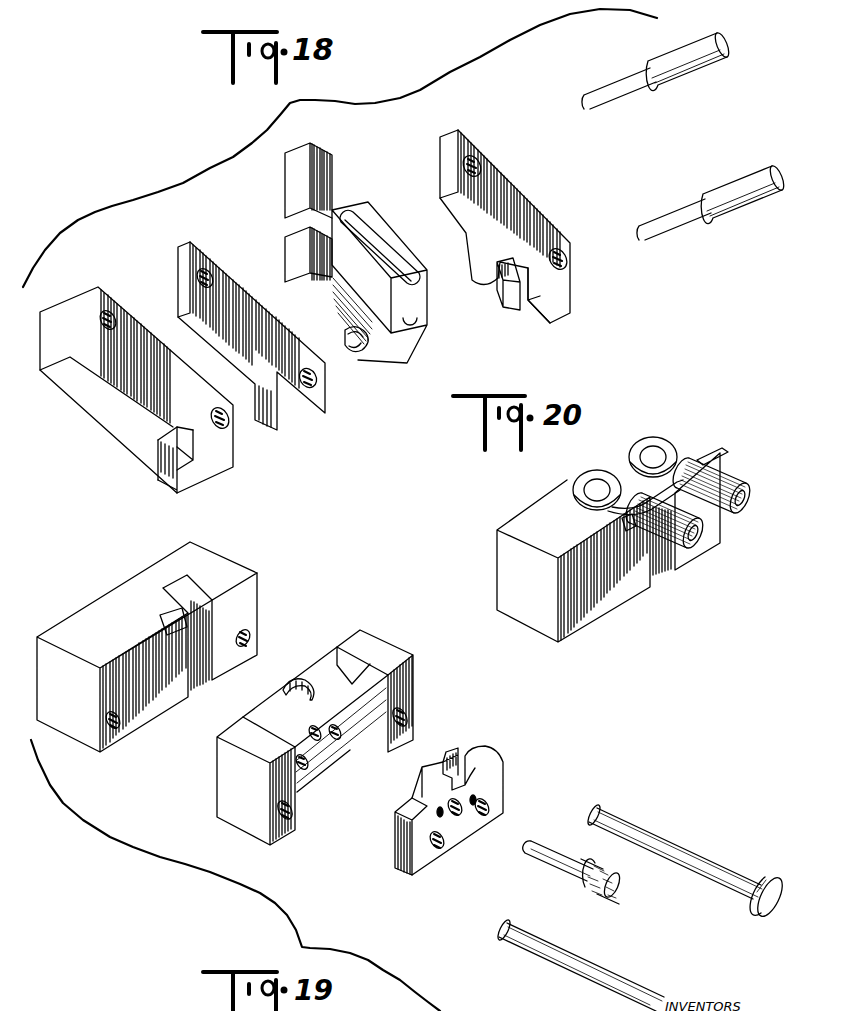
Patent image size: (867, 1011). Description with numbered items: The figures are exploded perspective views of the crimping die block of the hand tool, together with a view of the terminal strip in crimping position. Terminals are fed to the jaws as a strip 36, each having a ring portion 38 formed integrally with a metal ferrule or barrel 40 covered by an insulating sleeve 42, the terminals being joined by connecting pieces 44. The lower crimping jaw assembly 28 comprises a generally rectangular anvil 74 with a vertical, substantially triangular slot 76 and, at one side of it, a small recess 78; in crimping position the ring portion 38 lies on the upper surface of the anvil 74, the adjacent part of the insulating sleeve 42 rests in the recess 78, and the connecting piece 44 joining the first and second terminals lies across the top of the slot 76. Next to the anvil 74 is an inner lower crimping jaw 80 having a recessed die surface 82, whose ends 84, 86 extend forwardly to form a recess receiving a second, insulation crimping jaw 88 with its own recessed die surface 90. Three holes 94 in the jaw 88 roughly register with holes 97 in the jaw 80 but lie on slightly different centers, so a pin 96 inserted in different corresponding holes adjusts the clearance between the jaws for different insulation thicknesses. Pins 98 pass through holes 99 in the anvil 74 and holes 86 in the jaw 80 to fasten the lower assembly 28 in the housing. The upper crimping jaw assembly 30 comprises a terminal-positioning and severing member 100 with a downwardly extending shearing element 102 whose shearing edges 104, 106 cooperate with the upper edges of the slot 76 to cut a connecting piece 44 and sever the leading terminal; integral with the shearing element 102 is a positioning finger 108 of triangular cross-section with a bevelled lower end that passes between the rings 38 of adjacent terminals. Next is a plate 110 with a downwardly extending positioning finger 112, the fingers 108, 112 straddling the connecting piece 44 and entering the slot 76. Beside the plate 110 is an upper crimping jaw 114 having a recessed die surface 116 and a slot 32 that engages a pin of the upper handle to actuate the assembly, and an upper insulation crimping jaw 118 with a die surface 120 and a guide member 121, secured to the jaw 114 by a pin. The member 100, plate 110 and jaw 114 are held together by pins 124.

In FIG. 18, the upper crimping jaw assembly 30 is at (272, 110).
In FIG. 18, the terminal-positioning and severing member 100 is at (82, 300).
In FIG. 18, the shearing element 102 is at (158, 447).
In FIG. 18, the shearing edge 104 is at (158, 462).
In FIG. 18, the shearing edge 106 is at (187, 465).
In FIG. 18, the positioning finger 108 is at (167, 475).
In FIG. 18, the plate 110 is at (223, 287).
In FIG. 18, the positioning finger 112 is at (278, 405).
In FIG. 18, the upper crimping jaw 114 is at (302, 175).
In FIG. 18, the slot 32 is at (392, 227).
In FIG. 18, the recessed die surface 116 is at (353, 350).
In FIG. 18, the upper insulation crimping jaw 118 is at (442, 160).
In FIG. 18, the die surface 120 is at (500, 284).
In FIG. 18, the guide member 121 is at (532, 316).
In FIG. 18, the pins 124 is at (678, 57).
In FIG. 20, the anvil 74 is at (515, 520).
In FIG. 19, the anvil 74 is at (83, 615).
In FIG. 20, the slot 76 is at (660, 570).
In FIG. 19, the slot 76 is at (207, 592).
In FIG. 20, the recess 78 is at (628, 531).
In FIG. 19, the recess 78 is at (163, 618).
In FIG. 19, the holes 99 is at (250, 635).
In FIG. 19, the lower crimping jaw assembly 28 is at (285, 950).
In FIG. 19, the inner lower crimping jaw 80 is at (253, 712).
In FIG. 19, the recessed die surface 82 is at (292, 688).
In FIG. 19, the end 84 is at (403, 682).
In FIG. 19, the end 86 is at (405, 717).
In FIG. 19, the holes 97 is at (332, 740).
In FIG. 19, the insulation crimping jaw 88 is at (425, 862).
In FIG. 19, the recessed die surface 90 is at (454, 750).
In FIG. 19, the holes 94 is at (482, 815).
In FIG. 19, the pin 96 is at (550, 847).
In FIG. 19, the pins 98 is at (707, 865).
In FIG. 20, the strip 36 is at (661, 473).
In FIG. 20, the ring portion 38 is at (600, 443).
In FIG. 20, the barrel 40 is at (747, 515).
In FIG. 20, the insulating sleeve 42 is at (723, 482).
In FIG. 20, the connecting piece 44 is at (590, 518).